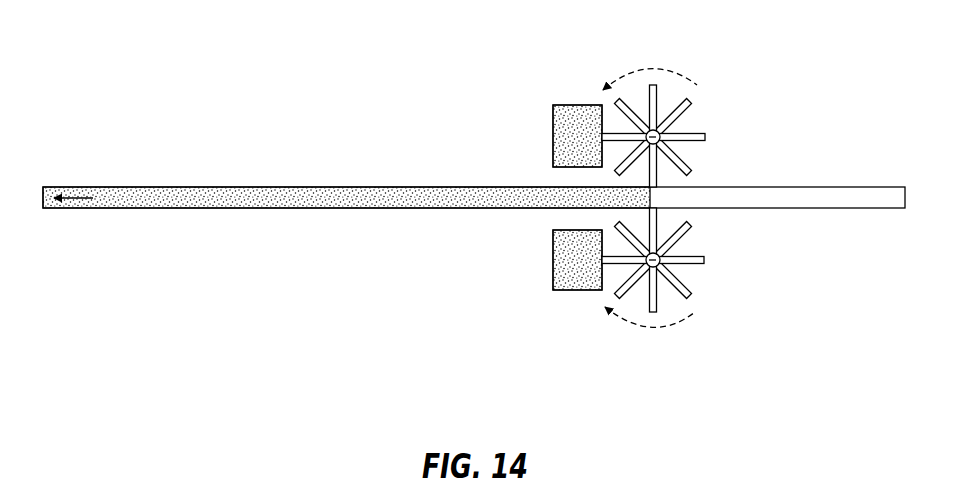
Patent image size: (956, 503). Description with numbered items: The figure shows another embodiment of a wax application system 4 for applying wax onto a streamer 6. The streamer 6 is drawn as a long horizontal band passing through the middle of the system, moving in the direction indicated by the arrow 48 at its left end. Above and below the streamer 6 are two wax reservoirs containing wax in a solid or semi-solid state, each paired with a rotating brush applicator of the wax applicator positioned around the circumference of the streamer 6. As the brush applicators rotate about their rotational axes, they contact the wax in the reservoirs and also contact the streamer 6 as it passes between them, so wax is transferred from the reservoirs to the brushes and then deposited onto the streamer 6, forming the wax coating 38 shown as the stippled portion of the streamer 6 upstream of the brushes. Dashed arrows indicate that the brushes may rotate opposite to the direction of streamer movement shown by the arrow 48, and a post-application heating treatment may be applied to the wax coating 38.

The wax application system 4 is at (362, 36).
The streamer 6 is at (828, 187).
The wax coating 38 is at (115, 208).
The arrow 48 is at (93, 198).